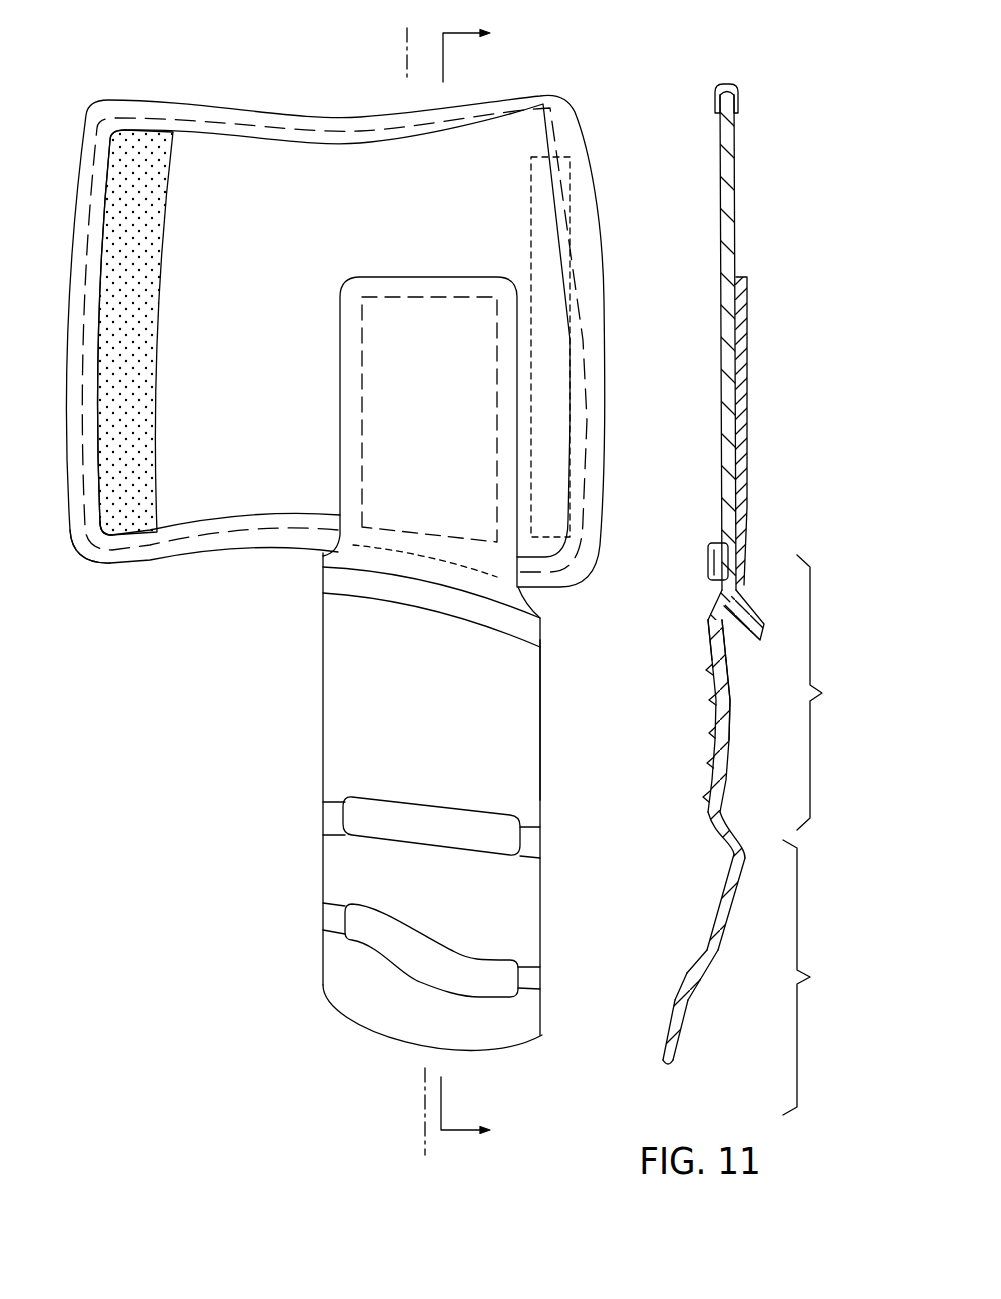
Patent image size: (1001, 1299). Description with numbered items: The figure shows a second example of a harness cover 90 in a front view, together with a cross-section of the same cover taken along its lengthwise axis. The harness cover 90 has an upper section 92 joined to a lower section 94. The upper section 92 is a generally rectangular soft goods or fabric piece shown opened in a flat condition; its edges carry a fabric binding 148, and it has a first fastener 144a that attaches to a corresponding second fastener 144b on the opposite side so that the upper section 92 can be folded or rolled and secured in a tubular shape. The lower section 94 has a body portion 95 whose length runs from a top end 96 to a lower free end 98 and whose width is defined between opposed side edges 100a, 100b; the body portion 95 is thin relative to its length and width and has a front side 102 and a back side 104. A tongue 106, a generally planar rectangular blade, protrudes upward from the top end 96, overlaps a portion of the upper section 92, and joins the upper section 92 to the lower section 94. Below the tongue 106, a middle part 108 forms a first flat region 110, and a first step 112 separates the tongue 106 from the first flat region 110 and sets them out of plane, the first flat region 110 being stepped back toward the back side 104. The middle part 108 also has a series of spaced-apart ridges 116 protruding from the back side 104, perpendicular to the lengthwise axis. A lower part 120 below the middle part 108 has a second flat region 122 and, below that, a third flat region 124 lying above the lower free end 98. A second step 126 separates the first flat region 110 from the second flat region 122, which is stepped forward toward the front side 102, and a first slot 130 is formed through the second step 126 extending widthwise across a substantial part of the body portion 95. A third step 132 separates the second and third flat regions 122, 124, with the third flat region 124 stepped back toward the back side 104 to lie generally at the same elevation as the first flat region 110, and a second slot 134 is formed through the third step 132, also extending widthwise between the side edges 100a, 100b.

In FIG. 10, the harness cover 90 is at (165, 72).
In FIG. 10, the upper section 92 is at (190, 243).
In FIG. 11, the upper section 92 is at (728, 223).
In FIG. 10, the lower section 94 is at (410, 838).
In FIG. 10, the body portion 95 is at (393, 832).
In FIG. 10, the top end 96 is at (320, 552).
In FIG. 11, the top end 96 is at (730, 600).
In FIG. 10, the lower free end 98 is at (464, 1055).
In FIG. 11, the lower free end 98 is at (667, 1070).
In FIG. 10, the side edge 100a is at (323, 707).
In FIG. 10, the side edge 100b is at (547, 682).
In FIG. 11, the front side 102 is at (723, 658).
In FIG. 11, the back side 104 is at (710, 647).
In FIG. 10, the tongue 106 is at (403, 327).
In FIG. 11, the tongue 106 is at (740, 447).
In FIG. 11, the middle part 108 is at (742, 692).
In FIG. 10, the first flat region 110 is at (530, 742).
In FIG. 11, the first flat region 110 is at (737, 757).
In FIG. 10, the first step 112 is at (433, 582).
In FIG. 11, the first step 112 is at (733, 613).
In FIG. 11, the ridges 116 is at (712, 797).
In FIG. 11, the lower part 120 is at (748, 978).
In FIG. 10, the second flat region 122 is at (343, 873).
In FIG. 11, the second flat region 122 is at (730, 893).
In FIG. 10, the third flat region 124 is at (517, 1032).
In FIG. 11, the third flat region 124 is at (687, 1035).
In FIG. 10, the second step 126 is at (533, 845).
In FIG. 11, the second step 126 is at (733, 835).
In FIG. 10, the first slot 130 is at (403, 820).
In FIG. 11, the first slot 130 is at (720, 853).
In FIG. 10, the third step 132 is at (535, 983).
In FIG. 11, the third step 132 is at (708, 962).
In FIG. 10, the second slot 134 is at (372, 933).
In FIG. 11, the second slot 134 is at (688, 968).
In FIG. 10, the first fastener 144a is at (135, 510).
In FIG. 10, the second fastener 144b is at (547, 202).
In FIG. 10, the fabric binding 148 is at (95, 548).
In FIG. 11, the fabric binding 148 is at (724, 82).